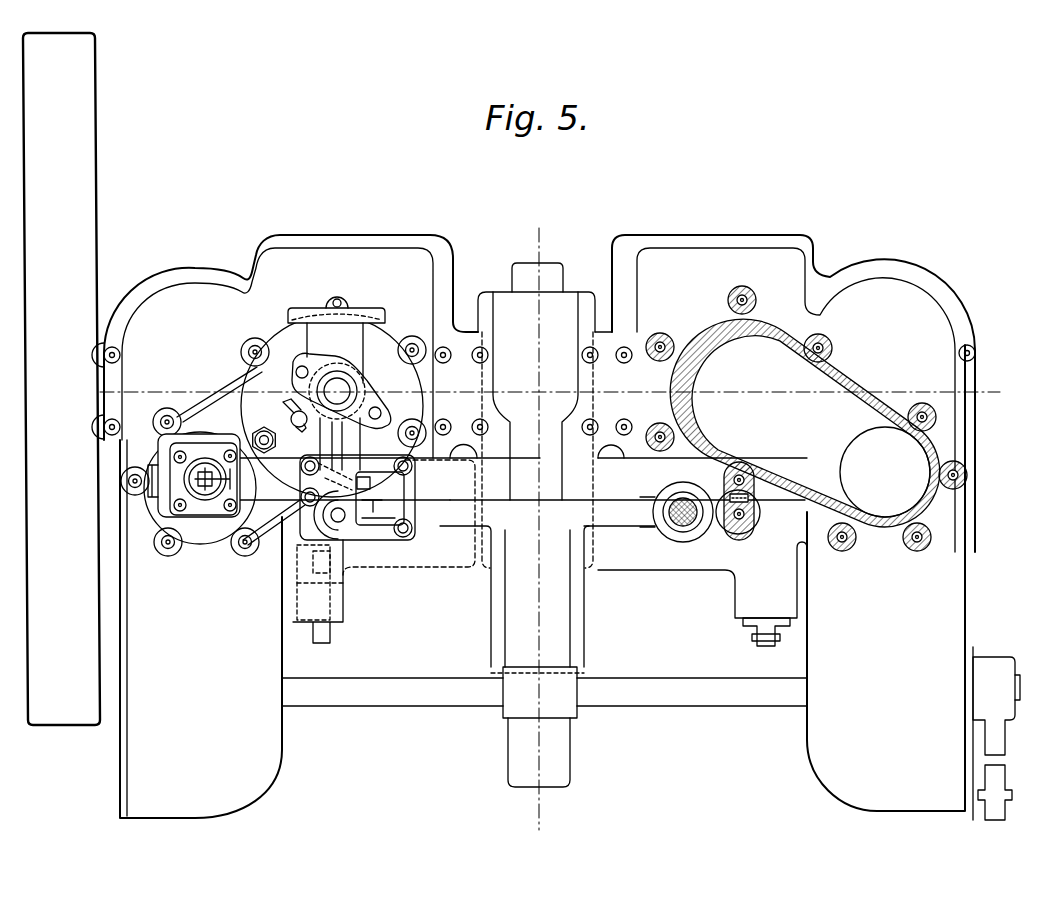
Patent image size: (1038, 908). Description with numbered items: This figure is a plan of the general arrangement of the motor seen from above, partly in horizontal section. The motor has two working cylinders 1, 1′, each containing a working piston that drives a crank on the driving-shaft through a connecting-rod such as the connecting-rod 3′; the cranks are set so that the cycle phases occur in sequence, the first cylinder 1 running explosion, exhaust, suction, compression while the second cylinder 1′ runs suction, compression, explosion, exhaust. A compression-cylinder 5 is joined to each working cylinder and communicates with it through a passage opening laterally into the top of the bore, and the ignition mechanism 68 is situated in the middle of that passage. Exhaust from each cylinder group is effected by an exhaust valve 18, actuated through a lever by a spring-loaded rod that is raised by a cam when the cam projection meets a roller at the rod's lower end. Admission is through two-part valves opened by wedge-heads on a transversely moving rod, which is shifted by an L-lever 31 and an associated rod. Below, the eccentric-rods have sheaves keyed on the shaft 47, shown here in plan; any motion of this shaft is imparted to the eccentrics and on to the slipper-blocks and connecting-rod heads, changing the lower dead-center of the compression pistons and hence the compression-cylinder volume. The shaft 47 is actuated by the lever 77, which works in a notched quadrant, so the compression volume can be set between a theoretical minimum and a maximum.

The working cylinder 1 is at (301, 397).
The working cylinder 1′ is at (752, 378).
The connecting-rod 3′ is at (885, 472).
The compression-cylinder 5 is at (213, 482).
The exhaust valve 18 is at (338, 389).
The L-lever 31 is at (384, 549).
The shaft 47 is at (377, 689).
The ignition mechanism 68 is at (275, 446).
The lever 77 is at (986, 733).